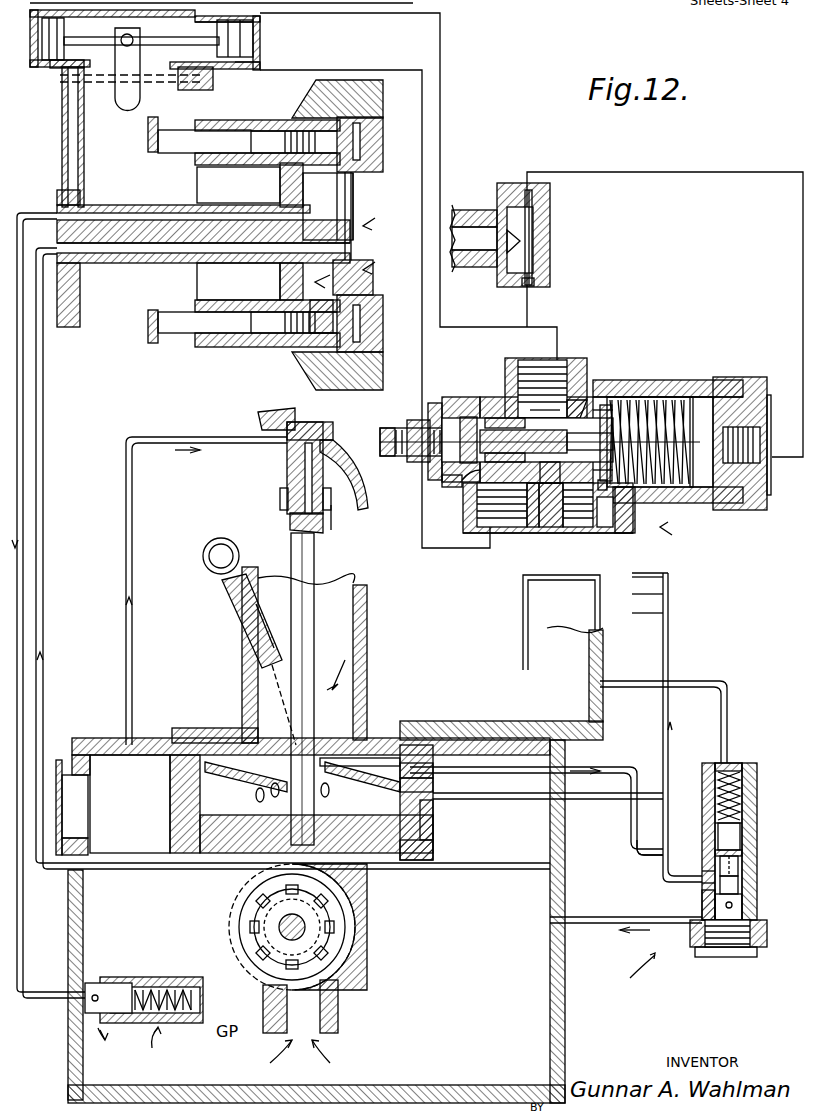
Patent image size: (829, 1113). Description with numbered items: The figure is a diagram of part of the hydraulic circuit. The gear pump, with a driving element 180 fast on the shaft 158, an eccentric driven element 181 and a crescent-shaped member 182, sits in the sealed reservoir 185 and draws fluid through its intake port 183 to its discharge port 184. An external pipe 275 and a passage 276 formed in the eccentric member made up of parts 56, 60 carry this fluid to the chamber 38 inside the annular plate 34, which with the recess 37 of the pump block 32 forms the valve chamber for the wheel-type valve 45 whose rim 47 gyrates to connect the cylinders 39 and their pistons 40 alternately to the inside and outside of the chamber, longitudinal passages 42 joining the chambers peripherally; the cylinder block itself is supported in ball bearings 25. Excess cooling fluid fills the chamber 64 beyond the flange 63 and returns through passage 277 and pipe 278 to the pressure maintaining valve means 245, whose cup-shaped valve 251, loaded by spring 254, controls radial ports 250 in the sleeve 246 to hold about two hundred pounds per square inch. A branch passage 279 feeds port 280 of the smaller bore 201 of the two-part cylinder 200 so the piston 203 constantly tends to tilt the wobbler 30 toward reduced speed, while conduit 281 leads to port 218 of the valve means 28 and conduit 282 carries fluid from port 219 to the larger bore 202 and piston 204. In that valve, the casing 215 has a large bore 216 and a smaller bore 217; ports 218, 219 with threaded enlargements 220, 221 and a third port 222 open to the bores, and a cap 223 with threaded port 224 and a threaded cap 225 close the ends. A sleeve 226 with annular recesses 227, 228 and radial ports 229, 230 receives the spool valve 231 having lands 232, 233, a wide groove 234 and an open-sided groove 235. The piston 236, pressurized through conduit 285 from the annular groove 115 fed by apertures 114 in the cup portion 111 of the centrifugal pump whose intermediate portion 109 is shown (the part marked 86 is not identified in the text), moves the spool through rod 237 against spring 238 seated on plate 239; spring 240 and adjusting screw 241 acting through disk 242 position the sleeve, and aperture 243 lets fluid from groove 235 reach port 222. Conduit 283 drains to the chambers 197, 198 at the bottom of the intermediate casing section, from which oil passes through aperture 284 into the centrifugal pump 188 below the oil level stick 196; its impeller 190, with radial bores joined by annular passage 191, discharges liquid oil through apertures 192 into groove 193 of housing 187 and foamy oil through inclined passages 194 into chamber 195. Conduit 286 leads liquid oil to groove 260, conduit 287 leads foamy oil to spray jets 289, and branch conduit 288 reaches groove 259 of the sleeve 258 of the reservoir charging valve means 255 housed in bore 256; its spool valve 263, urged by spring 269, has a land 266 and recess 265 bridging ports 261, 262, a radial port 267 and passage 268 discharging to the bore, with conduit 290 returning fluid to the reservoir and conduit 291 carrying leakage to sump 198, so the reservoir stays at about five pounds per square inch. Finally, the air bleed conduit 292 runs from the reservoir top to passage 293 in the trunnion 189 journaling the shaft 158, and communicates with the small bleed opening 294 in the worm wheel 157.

The two-part cylinder 200 is at (145, 60).
The bore 201 is at (262, 18).
The larger bore 202 is at (62, 90).
The piston 203 is at (213, 30).
The piston 204 is at (50, 48).
The port 280 is at (256, 62).
The passage 279 is at (65, 142).
The circular recess 37 is at (310, 100).
The rim 47 is at (300, 375).
The longitudinal passages 42 is at (378, 112).
The plate 34 is at (373, 150).
The pump block 32 is at (300, 122).
The piston 40 is at (220, 325).
The wobbler 30 is at (150, 343).
The annular flange 63 is at (280, 189).
The chamber 64 is at (328, 206).
The second part 60 is at (235, 263).
The passage 277 is at (115, 212).
The passage 276 is at (140, 257).
The part 56 is at (105, 263).
The chamber 38 is at (380, 217).
The valve 45 is at (355, 273).
The cylinders 39 is at (330, 340).
The external pipe 278 is at (24, 393).
The external pipe 275 is at (43, 568).
The air bleed conduit 292 is at (126, 477).
The conduit 283 is at (570, 578).
The conduit 287 is at (668, 636).
The jets or nozzles 289 is at (668, 596).
The conduit 291 is at (712, 681).
The conduit 286 is at (632, 767).
The conduit 288 is at (637, 843).
The conduit 290 is at (603, 924).
The conduit 282 is at (440, 160).
The conduit 281 is at (422, 136).
The conduit 285 is at (698, 172).
The hollow intermediate portion 109 is at (475, 210).
The annular groove 115 is at (540, 190).
The cup portion 111 is at (535, 208).
The apertures 114 is at (545, 280).
The bore 86 is at (473, 268).
The threaded cap 225 is at (436, 403).
The sleeve 226 is at (465, 400).
The casing 215 is at (580, 400).
The threaded enlargement 221 is at (525, 375).
The port 219 is at (540, 380).
The radial ports 230 is at (575, 398).
The disk 242 is at (414, 420).
The adjusting screw 241 is at (412, 420).
The bore 217 is at (465, 417).
The annular recess 227 is at (500, 418).
The longitudinal bore 216 is at (712, 385).
The plate 239 is at (640, 380).
The rigid wire or rod 237 is at (680, 380).
The compression spring 238 is at (650, 397).
The spool valve 231 is at (610, 400).
The piston 236 is at (695, 505).
The threaded port 224 is at (770, 395).
The cap 223 is at (770, 495).
The annular recess 228 is at (570, 530).
The port 218 is at (482, 505).
The compression spring 240 is at (605, 527).
The land 232 is at (458, 482).
The annular groove 234 is at (475, 488).
The radial ports 229 is at (490, 533).
The threaded enlargement 220 is at (530, 527).
The land 233 is at (545, 527).
The open-sided groove 235 is at (552, 485).
The port 222 is at (628, 520).
The valve means 28 is at (678, 539).
The central aperture 243 is at (612, 482).
The trunnion 189 is at (287, 475).
The passage 293 is at (335, 440).
The bleed opening 294 is at (280, 500).
The worm wheel 157 is at (331, 512).
The shaft 158 is at (312, 660).
The chamber 197 is at (338, 595).
The oil level stick 196 is at (228, 610).
The chamber or sump 198 is at (501, 669).
The aperture 284 is at (345, 662).
The centrifugal pump 188 is at (188, 794).
The impeller 190 is at (250, 800).
The passages 194 is at (362, 800).
The annular passage 191 is at (370, 760).
The radial apertures 192 is at (410, 775).
The annular groove 193 is at (425, 770).
The housing 187 is at (435, 812).
The annular chamber 195 is at (433, 846).
The fluid sump or reservoir 185 is at (752, 750).
The discharge port 184 is at (350, 878).
The driven element 181 is at (242, 927).
The driving element 180 is at (330, 940).
The crescent-shaped member 182 is at (255, 937).
The intake port 183 is at (340, 1003).
The radial ports 250 is at (106, 975).
The cup-shaped valve 251 is at (116, 990).
The compression spring 254 is at (162, 987).
The sleeve 246 is at (118, 1025).
The pressure maintaining valve means 245 is at (167, 1051).
The reservoir charging valve means 255 is at (691, 879).
The compression spring 269 is at (712, 768).
The sleeve 258 is at (708, 825).
The spool valve 263 is at (750, 812).
The radial port 267 is at (748, 838).
The bore 256 is at (748, 855).
The radial ports 262 is at (748, 868).
The radial ports 261 is at (748, 886).
The annular groove 259 is at (748, 900).
The annular groove 260 is at (702, 866).
The land 266 is at (702, 880).
The annular recess 265 is at (702, 905).
The longitudinal passage 268 is at (760, 930).
The ball bearings 25 is at (727, 957).